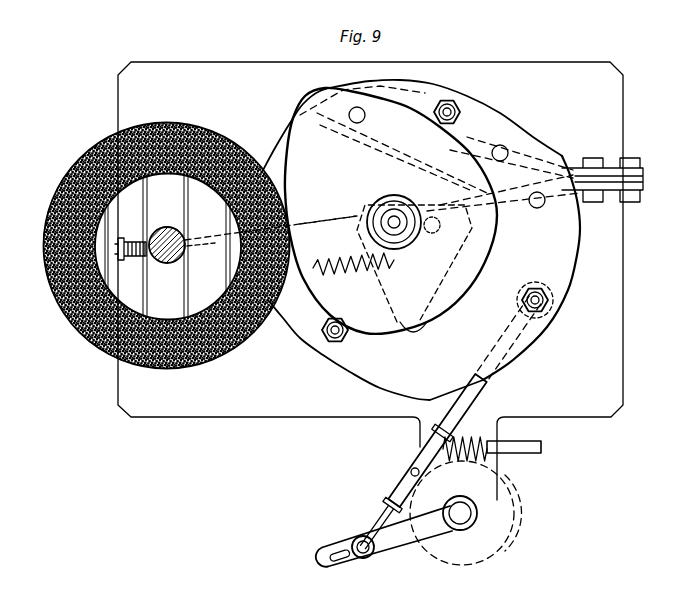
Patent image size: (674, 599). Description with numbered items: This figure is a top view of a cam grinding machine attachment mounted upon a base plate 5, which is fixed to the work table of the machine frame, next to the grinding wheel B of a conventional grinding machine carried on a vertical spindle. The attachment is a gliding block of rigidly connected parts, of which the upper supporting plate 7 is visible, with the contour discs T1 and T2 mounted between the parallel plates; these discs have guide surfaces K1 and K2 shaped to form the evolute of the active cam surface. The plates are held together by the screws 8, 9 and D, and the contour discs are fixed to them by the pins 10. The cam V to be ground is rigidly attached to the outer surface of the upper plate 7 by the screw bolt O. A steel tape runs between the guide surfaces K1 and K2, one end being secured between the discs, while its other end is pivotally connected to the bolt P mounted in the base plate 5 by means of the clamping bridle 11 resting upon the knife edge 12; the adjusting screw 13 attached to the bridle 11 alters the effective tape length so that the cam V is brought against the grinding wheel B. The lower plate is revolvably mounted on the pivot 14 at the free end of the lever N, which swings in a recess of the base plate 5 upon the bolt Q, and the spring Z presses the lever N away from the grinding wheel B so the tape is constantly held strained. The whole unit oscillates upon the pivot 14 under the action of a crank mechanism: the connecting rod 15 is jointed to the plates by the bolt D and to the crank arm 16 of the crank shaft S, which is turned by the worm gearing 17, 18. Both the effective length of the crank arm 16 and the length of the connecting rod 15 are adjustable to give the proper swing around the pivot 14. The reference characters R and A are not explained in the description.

The base plate 5 is at (606, 378).
The grinding wheel B is at (177, 134).
The bolt P is at (171, 228).
The knife edge 12 is at (142, 237).
The adjusting screw 13 is at (127, 262).
The clamping bridle 11 is at (192, 244).
The upper supporting plate 7 is at (378, 360).
The cam V is at (320, 110).
The guide surface K2 is at (369, 148).
The radius line R is at (337, 218).
The screw bolt O is at (394, 207).
The pivot 14 is at (385, 213).
The guide surface K1 is at (440, 212).
The contour disc T2 is at (498, 119).
The contour disc T1 is at (513, 208).
The screw 9 is at (462, 112).
The pins 10 is at (507, 150).
The crank shaft S is at (607, 162).
The bolt D is at (553, 300).
The lever N is at (420, 304).
The bolt Q is at (418, 340).
The spring Z is at (341, 270).
The screw 8 is at (325, 334).
The connecting rod 15 is at (462, 404).
The pin A is at (356, 538).
The crank arm 16 is at (318, 557).
The worm gearing 17 is at (512, 530).
The worm gearing 18 is at (528, 453).